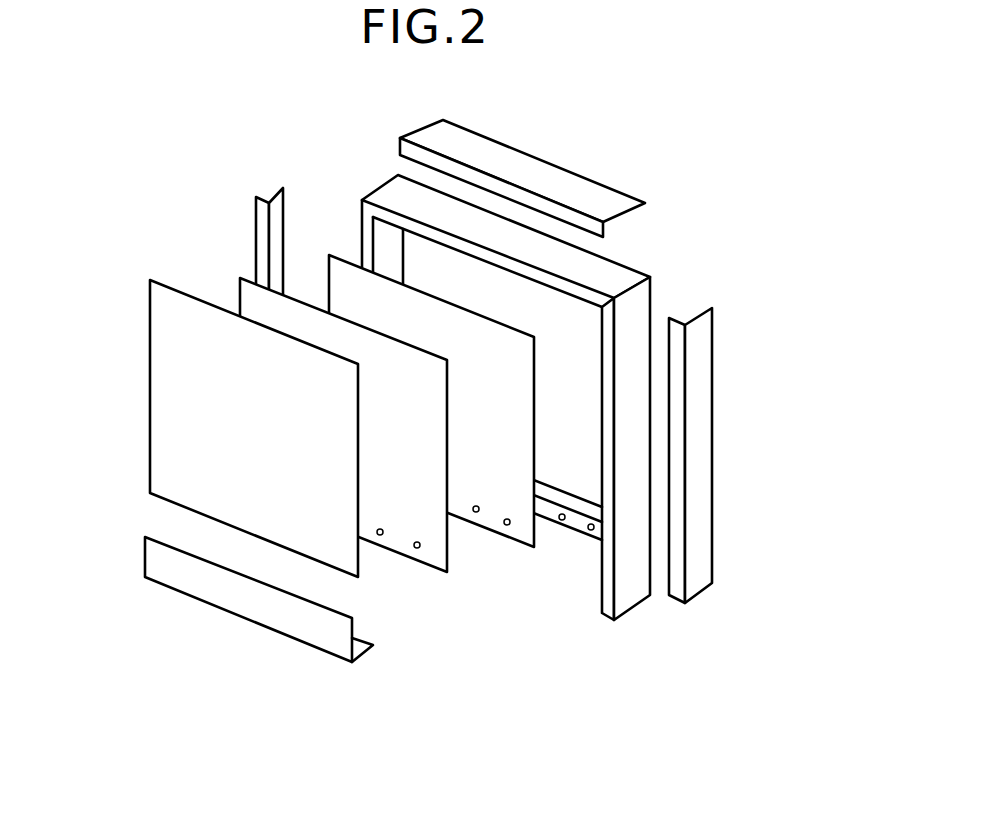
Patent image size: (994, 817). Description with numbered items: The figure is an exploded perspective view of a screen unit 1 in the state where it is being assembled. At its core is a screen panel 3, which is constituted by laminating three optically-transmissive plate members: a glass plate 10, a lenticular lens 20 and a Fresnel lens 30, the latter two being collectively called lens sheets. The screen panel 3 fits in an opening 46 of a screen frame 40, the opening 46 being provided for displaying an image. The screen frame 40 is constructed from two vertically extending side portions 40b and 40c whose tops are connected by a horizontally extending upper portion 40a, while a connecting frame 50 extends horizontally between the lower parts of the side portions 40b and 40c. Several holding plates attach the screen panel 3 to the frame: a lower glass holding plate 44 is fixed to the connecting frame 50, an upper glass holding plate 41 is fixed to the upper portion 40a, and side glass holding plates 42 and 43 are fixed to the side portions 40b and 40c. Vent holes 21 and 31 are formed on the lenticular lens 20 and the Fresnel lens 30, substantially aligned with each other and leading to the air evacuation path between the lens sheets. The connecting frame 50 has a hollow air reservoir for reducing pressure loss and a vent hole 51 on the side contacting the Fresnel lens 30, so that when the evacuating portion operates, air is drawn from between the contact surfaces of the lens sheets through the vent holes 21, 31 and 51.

The screen unit 1 is at (443, 397).
The screen panel 3 is at (306, 385).
The glass plate 10 is at (226, 417).
The lenticular lens 20 is at (286, 428).
The vent hole 21 is at (414, 551).
The Fresnel lens 30 is at (350, 386).
The vent hole 31 is at (507, 526).
The screen frame 40 is at (555, 351).
The upper portion 40a is at (483, 227).
The side portion 40b is at (361, 238).
The side portion 40c is at (632, 481).
The upper glass holding plate 41 is at (582, 172).
The side glass holding plate 42 is at (261, 197).
The side glass holding plate 43 is at (712, 377).
The lower glass holding plate 44 is at (243, 613).
The opening 46 is at (577, 342).
The connecting frame 50 is at (536, 551).
The vent hole 51 is at (558, 522).